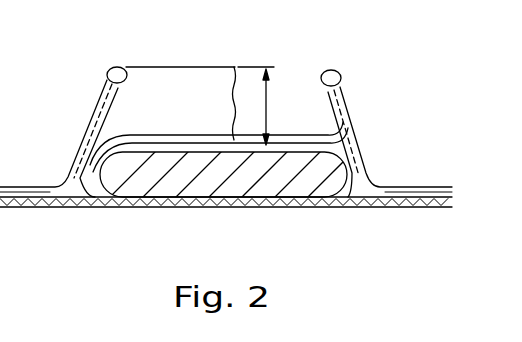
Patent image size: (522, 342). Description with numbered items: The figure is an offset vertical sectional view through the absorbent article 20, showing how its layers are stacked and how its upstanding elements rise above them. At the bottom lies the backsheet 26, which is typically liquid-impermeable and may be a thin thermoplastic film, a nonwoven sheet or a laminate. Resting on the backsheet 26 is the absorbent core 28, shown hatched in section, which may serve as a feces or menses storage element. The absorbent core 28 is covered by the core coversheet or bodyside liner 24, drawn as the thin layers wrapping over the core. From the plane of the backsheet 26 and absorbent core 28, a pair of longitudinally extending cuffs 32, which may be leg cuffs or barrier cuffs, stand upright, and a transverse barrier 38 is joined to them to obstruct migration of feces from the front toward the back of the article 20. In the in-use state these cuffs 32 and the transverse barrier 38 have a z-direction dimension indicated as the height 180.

The absorbent article 20 is at (380, 232).
The core coversheet or bodyside liner 24 is at (330, 142).
The backsheet 26 is at (253, 207).
The absorbent core 28 is at (299, 186).
The longitudinally extending cuffs 32 is at (346, 102).
The transverse barrier 38 is at (178, 110).
The height 180 is at (271, 107).